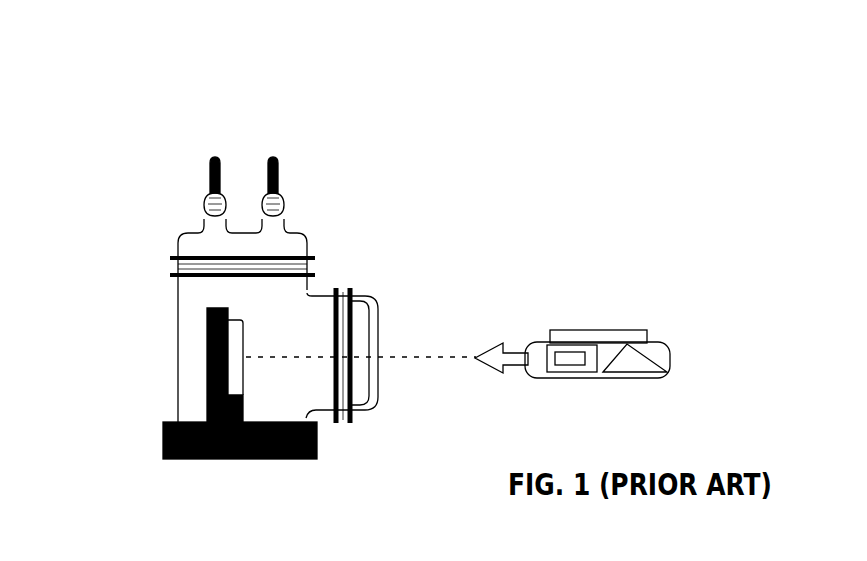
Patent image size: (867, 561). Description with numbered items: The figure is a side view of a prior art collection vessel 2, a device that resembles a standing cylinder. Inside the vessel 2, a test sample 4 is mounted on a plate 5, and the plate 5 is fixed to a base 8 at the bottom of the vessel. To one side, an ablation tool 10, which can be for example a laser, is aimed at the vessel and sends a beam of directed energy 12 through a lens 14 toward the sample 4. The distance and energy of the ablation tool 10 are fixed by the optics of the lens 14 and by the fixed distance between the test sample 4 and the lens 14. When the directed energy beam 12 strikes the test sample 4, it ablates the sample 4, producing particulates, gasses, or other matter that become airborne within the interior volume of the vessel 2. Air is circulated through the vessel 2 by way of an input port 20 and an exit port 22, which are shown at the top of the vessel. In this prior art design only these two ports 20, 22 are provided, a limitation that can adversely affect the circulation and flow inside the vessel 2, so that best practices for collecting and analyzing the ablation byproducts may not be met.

The prior art collection vessel 2 is at (142, 375).
The test sample 4 is at (244, 357).
The plate 5 is at (204, 318).
The base 8 is at (318, 442).
The ablation tool 10 is at (657, 350).
The beam of directed energy 12 is at (421, 356).
The lens 14 is at (379, 333).
The input port 20 is at (272, 158).
The exit port 22 is at (209, 191).